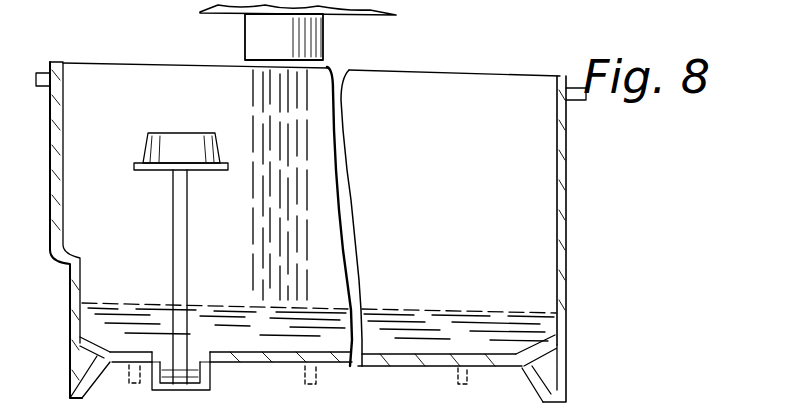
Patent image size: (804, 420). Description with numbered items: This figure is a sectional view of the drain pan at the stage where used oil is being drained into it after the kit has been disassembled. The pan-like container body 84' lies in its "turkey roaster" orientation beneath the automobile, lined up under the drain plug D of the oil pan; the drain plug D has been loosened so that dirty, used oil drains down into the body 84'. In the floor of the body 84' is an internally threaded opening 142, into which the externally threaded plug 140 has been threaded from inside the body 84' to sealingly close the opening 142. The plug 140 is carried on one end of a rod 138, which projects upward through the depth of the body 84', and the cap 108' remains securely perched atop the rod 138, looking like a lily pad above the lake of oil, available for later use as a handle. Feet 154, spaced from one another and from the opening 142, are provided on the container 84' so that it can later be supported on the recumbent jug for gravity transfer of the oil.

The pan-like container body 84' is at (330, 232).
The drain plug D is at (325, 30).
The cap 108' is at (154, 142).
The rod 138 is at (173, 228).
The externally threaded plug 140 is at (194, 352).
The internally threaded opening 142 is at (165, 350).
The feet 154 is at (305, 388).